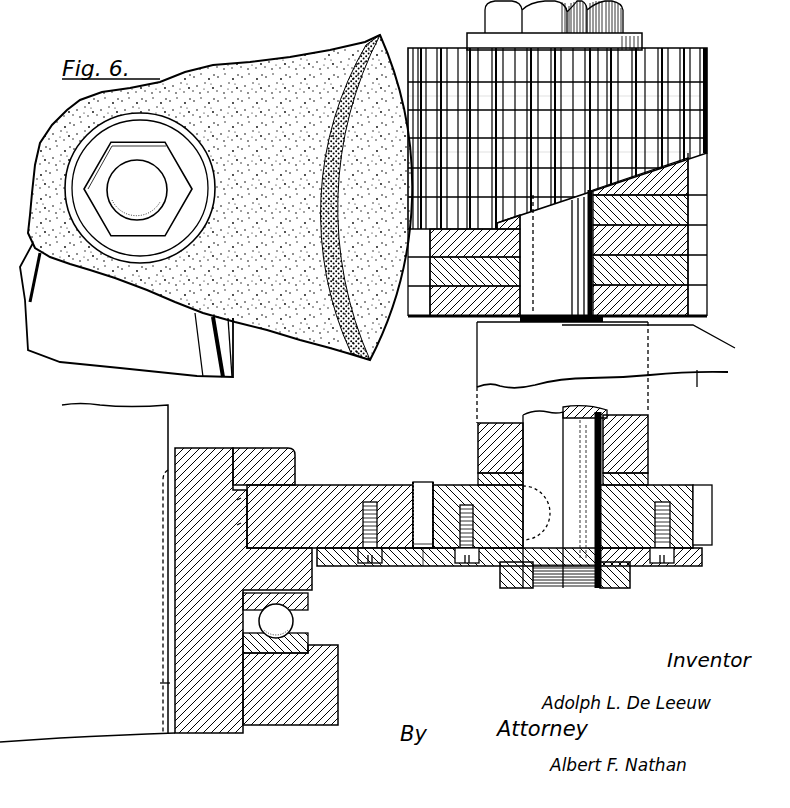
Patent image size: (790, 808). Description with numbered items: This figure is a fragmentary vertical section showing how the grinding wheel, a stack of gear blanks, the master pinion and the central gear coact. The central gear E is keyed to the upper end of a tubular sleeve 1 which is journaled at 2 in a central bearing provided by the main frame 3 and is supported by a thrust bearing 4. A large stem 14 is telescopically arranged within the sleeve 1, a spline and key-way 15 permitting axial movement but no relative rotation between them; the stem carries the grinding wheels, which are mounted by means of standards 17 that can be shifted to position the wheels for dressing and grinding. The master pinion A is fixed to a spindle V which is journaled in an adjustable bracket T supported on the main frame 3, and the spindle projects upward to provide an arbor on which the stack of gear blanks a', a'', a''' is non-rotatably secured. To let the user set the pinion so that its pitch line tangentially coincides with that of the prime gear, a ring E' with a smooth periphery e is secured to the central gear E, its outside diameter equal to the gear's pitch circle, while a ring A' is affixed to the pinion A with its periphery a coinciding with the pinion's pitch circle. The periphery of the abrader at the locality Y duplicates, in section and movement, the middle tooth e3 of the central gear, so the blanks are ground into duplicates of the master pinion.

The abrader periphery locality Y is at (305, 63).
The standards 17 is at (126, 310).
The gear blank a' is at (572, 140).
The gear blank a'' is at (574, 88).
The gear blank a''' is at (577, 133).
The spindle V is at (572, 244).
The bracket T is at (606, 372).
The master pinion A is at (572, 481).
The pitch-circle ring A' is at (443, 574).
The central gear E is at (330, 507).
The pitch-circle ring E' is at (509, 575).
The smooth periphery e is at (425, 566).
The middle tooth e3 is at (424, 482).
The ring periphery a is at (432, 585).
The tubular sleeve 1 is at (223, 724).
The journal 2 is at (253, 722).
The main frame 3 is at (338, 688).
The thrust bearing 4 is at (294, 622).
The stem 14 is at (116, 569).
The spline and key-way 15 is at (175, 590).